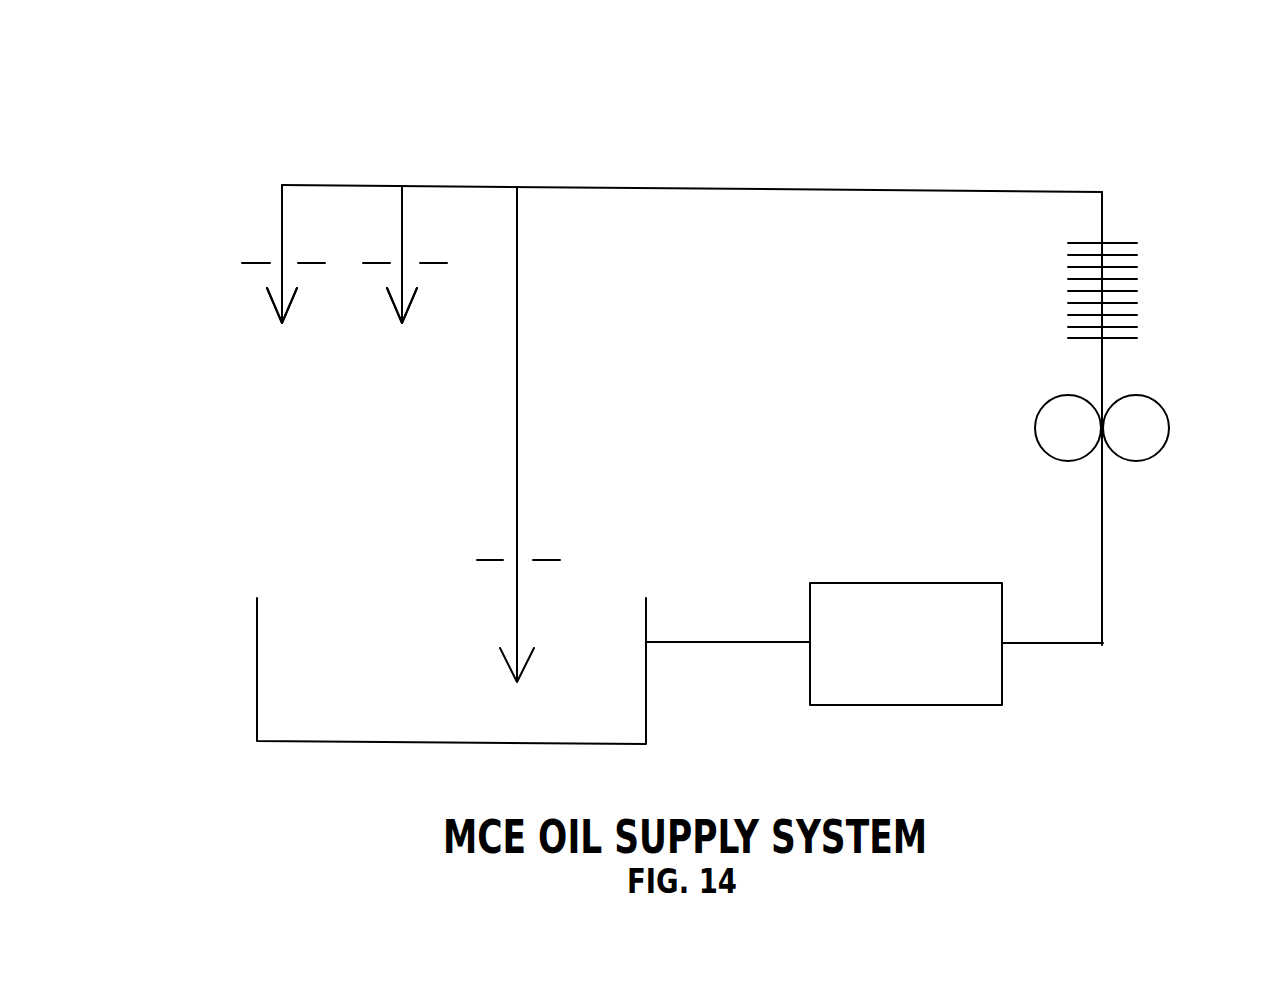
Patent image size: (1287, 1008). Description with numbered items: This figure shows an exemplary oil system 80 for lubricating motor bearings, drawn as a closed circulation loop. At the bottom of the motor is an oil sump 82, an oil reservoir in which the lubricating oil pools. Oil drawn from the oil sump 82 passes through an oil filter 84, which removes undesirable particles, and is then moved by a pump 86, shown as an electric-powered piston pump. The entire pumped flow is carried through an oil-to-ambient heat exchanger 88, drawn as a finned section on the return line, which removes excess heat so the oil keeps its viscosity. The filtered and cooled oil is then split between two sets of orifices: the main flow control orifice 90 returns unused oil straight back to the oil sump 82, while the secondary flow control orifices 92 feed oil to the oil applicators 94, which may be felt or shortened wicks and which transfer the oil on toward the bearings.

The oil system 80 is at (767, 494).
The oil sump 82 is at (451, 671).
The oil filter 84 is at (906, 644).
The pump 86 is at (1038, 404).
The oil-to-ambient heat exchanger 88 is at (1117, 243).
The main flow control orifice 90 is at (533, 538).
The secondary flow control orifice 92 is at (382, 248).
The oil applicator 94 is at (388, 318).